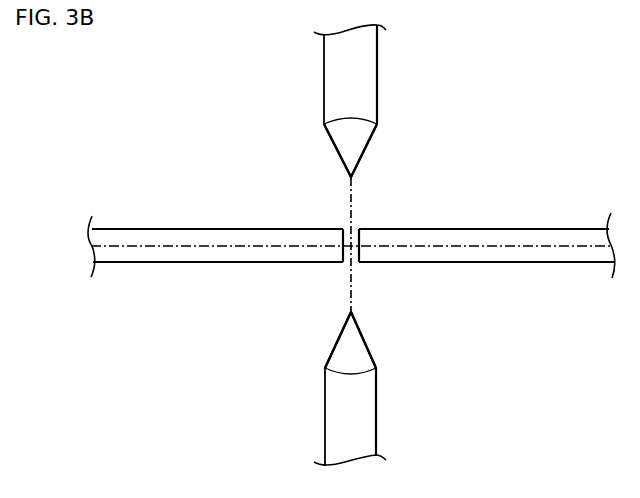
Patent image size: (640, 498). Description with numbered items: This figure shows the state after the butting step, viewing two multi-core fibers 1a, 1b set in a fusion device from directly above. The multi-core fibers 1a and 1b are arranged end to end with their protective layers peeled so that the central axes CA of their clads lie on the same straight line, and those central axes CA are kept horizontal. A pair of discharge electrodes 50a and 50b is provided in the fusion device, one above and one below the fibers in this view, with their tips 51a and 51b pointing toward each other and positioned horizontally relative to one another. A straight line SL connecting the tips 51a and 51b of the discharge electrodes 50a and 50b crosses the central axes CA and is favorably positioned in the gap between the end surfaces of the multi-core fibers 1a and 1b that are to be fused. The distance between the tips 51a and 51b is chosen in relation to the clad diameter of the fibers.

The discharge electrode 50a is at (373, 90).
The tip of discharge electrode 51a is at (348, 178).
The discharge electrode 50b is at (373, 397).
The tip of discharge electrode 51b is at (350, 313).
The straight line SL is at (352, 212).
The multi-core fiber 1a is at (210, 236).
The multi-core fiber 1b is at (449, 236).
The central axis CA is at (140, 246).